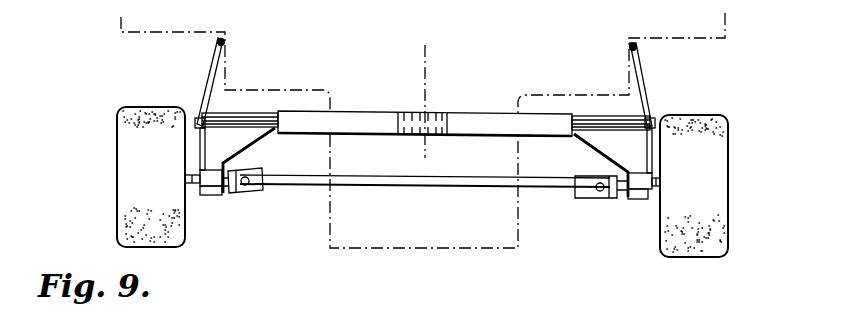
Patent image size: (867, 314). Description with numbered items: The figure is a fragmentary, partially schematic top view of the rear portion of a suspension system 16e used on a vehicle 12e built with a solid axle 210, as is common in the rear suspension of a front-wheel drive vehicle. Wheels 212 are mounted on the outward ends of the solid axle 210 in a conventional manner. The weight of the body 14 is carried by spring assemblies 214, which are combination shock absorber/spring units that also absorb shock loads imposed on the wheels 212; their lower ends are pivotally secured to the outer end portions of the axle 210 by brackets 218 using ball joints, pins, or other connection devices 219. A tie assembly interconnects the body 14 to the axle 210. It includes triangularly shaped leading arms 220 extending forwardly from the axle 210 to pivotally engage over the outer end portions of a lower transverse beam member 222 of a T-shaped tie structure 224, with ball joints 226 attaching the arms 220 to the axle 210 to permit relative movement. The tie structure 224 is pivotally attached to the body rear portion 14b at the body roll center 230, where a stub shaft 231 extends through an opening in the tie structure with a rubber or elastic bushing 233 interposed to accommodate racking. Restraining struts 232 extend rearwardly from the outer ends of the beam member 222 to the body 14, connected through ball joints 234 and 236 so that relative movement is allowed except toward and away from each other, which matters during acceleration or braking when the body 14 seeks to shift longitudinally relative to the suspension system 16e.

The vehicle 12e is at (101, 67).
The body 14 is at (728, 31).
The body rear portion 14b is at (476, 252).
The suspension system 16e is at (318, 218).
The solid axle 210 is at (543, 187).
The wheels 212 is at (731, 136).
The spring assemblies 214 is at (245, 193).
The brackets 218 is at (250, 154).
The connection devices 219 is at (233, 196).
The leading arms 220 is at (240, 133).
The lower transverse beam member 222 is at (356, 135).
The T-shaped tie structure 224 is at (438, 136).
The ball joints 226 is at (660, 200).
The body roll center 230 is at (428, 57).
The stub shaft 231 is at (418, 112).
The restraining struts 232 is at (208, 75).
The bushing 233 is at (391, 118).
The ball joints 234 is at (200, 118).
The ball joints 236 is at (216, 42).